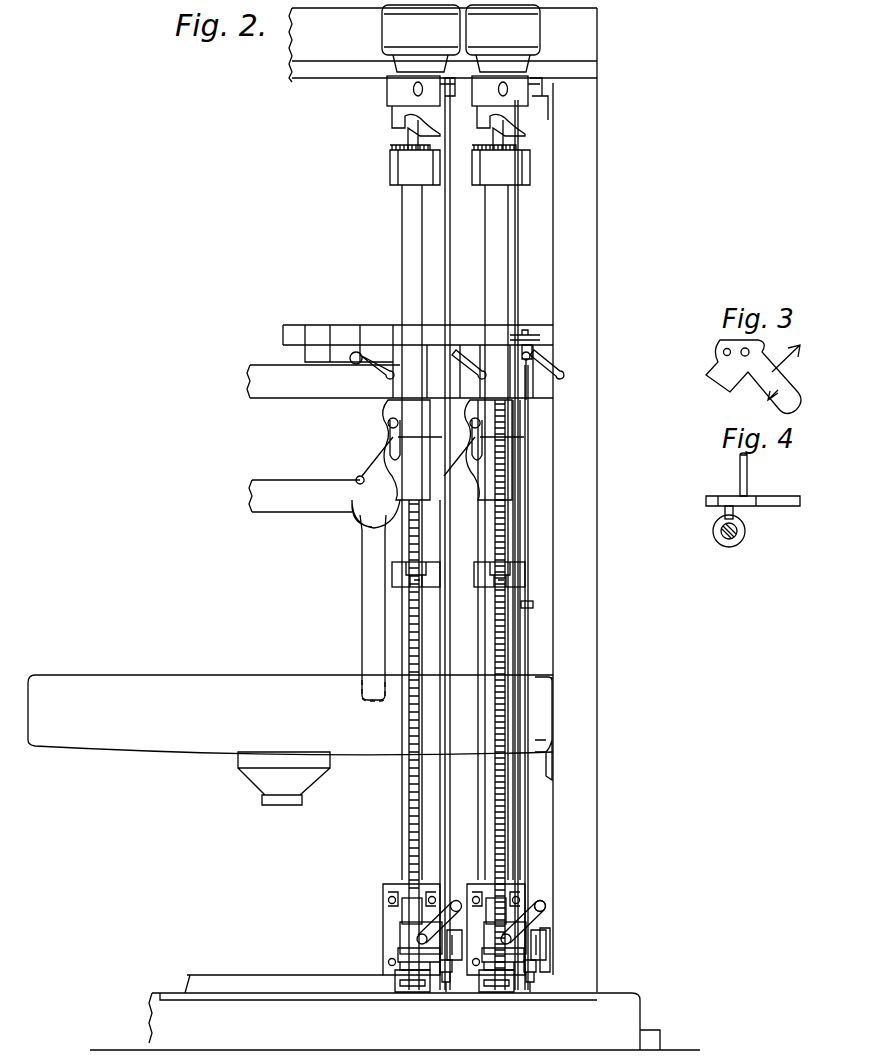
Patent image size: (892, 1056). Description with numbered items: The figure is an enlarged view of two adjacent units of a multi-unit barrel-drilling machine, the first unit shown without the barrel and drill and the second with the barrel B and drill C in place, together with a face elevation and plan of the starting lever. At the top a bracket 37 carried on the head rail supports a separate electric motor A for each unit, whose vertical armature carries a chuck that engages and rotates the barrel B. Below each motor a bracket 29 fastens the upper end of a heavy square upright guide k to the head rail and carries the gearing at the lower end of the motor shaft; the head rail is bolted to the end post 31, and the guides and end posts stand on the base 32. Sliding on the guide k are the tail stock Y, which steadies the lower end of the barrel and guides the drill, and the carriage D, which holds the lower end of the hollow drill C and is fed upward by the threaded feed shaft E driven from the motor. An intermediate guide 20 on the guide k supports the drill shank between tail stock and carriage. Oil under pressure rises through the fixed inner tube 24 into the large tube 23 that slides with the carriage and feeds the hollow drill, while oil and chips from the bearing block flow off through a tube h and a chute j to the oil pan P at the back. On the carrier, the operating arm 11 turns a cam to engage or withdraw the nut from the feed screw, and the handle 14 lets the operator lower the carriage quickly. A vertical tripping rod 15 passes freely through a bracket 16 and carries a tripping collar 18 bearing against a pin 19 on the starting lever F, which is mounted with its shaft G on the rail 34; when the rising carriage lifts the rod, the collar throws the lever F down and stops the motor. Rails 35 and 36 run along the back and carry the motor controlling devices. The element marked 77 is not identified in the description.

In FIG. 2, the bracket 37 is at (443, 45).
In FIG. 2, the electric motor A is at (461, 38).
In FIG. 2, the bracket 29 is at (388, 92).
In FIG. 2, the barrel B is at (415, 228).
In FIG. 2, the inner tube 24 is at (446, 262).
In FIG. 2, the drill C is at (412, 634).
In FIG. 2, the upright guide k is at (510, 545).
In FIG. 2, the end post 31 is at (576, 214).
In FIG. 2, the threaded feed shaft E is at (505, 852).
In FIG. 2, the tripping rod 15 is at (530, 636).
In FIG. 4, the tripping rod 15 is at (735, 538).
In FIG. 2, the rail 34 is at (385, 338).
In FIG. 2, the rail 35 is at (400, 381).
In FIG. 2, the bracket 16 is at (540, 336).
In FIG. 2, the shaft G is at (532, 352).
In FIG. 3, the shaft G is at (750, 350).
In FIG. 4, the shaft G is at (738, 463).
In FIG. 2, the starting lever F is at (556, 368).
In FIG. 3, the starting lever F is at (785, 372).
In FIG. 4, the starting lever F is at (782, 496).
In FIG. 2, the tripping collar 18 is at (533, 372).
In FIG. 4, the tripping collar 18 is at (716, 538).
In FIG. 2, the tail stock Y is at (384, 437).
In FIG. 2, the tube h is at (443, 461).
In FIG. 2, the rail 36 is at (306, 494).
In FIG. 2, the chute j is at (376, 600).
In FIG. 2, the intermediate guide 20 is at (520, 572).
In FIG. 2, the collar 77 is at (534, 604).
In FIG. 2, the oil pan P is at (290, 740).
In FIG. 2, the large tube 23 is at (447, 832).
In FIG. 2, the carriage D is at (392, 924).
In FIG. 2, the handle 14 is at (546, 906).
In FIG. 2, the operating arm 11 is at (550, 955).
In FIG. 2, the base 32 is at (395, 1012).
In FIG. 3, the pin 19 is at (722, 350).
In FIG. 4, the pin 19 is at (724, 514).